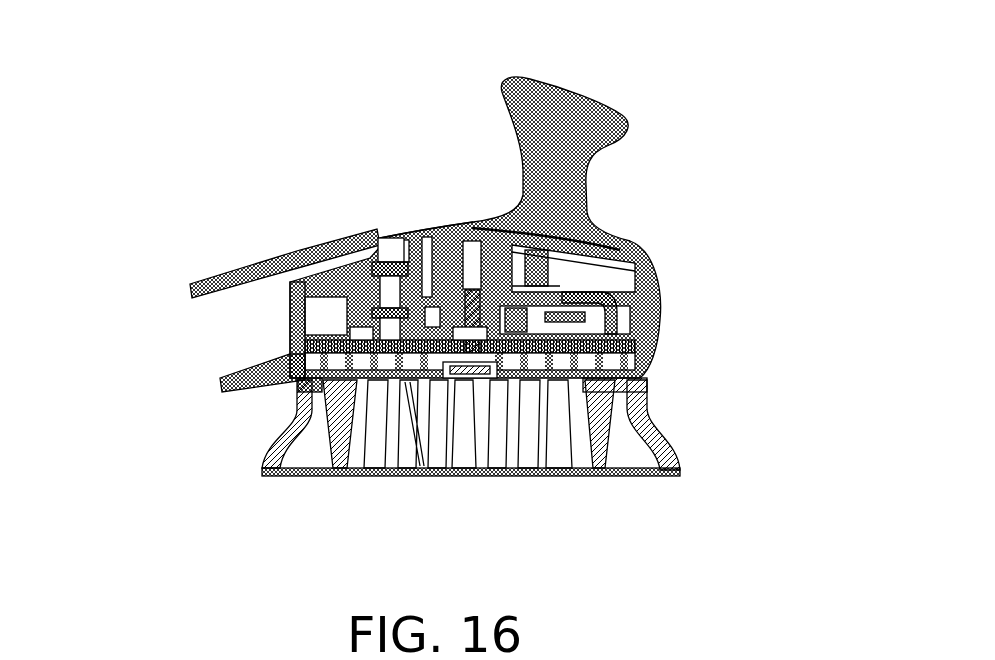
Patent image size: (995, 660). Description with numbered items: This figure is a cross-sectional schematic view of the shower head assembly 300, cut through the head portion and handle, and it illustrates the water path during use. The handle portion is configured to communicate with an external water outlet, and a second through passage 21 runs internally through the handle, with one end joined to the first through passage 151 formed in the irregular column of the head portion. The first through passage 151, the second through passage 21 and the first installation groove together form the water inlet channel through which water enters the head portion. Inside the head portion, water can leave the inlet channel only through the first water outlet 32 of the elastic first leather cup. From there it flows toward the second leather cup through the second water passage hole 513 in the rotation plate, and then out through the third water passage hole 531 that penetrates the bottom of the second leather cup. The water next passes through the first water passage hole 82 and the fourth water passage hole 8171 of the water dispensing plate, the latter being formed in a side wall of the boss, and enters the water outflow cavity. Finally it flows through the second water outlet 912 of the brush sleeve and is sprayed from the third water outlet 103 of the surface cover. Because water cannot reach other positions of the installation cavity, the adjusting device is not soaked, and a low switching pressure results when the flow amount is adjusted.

The vibration damping device 300 is at (747, 62).
The first water outlet 32 is at (378, 228).
The first through passage 151 is at (313, 242).
The second water passage hole 513 is at (325, 262).
The second through passage 21 is at (218, 325).
The third water passage hole 531 is at (300, 373).
The fourth water passage hole 8171 is at (365, 378).
The third water outlet 103 is at (378, 398).
The first water passage hole 82 is at (428, 476).
The second water outlet 912 is at (603, 460).